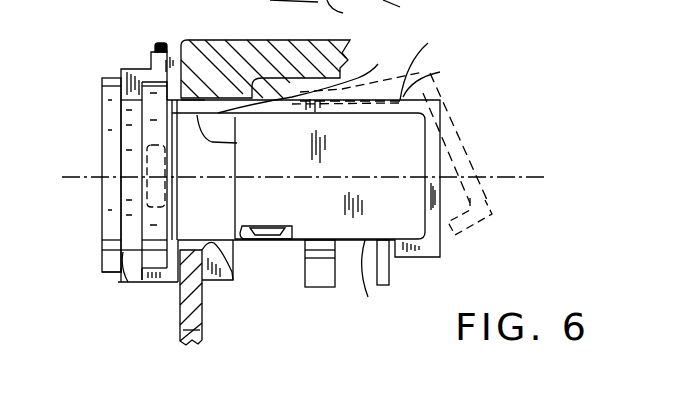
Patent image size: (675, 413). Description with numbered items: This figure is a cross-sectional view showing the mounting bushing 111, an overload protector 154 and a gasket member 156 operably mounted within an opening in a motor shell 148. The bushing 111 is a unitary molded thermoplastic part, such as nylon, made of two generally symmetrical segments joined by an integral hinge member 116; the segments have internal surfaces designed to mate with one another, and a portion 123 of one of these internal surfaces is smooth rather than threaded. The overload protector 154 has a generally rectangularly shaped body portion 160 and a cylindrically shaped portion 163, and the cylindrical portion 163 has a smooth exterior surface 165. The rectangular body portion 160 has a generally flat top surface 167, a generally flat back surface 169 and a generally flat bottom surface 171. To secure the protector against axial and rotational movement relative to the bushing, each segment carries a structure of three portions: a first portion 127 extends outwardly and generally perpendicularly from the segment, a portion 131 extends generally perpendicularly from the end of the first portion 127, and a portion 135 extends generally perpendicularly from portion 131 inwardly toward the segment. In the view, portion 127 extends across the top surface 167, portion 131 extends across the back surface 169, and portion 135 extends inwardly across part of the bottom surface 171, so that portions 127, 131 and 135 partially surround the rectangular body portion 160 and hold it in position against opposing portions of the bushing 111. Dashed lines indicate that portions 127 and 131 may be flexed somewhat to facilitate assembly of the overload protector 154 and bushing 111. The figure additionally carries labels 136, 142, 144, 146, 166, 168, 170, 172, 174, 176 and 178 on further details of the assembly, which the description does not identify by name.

The mounting bushing 111 is at (122, 52).
The hinge member 116 is at (161, 42).
The smooth portion of internal surface 123 is at (237, 143).
The first portion 127 is at (437, 67).
The portion extending from first portion 131 is at (442, 168).
The inwardly extending portion 135 is at (412, 256).
The housing cover 136 is at (356, 16).
The bolt assembly 142 is at (125, 290).
The cover flange 144 is at (408, 14).
The mounting post 146 is at (181, 330).
The motor shell 148 is at (200, 330).
The overload protector 154 is at (349, 250).
The gasket member 156 is at (99, 136).
The rectangular body portion 160 is at (402, 142).
The cylindrically shaped portion 163 is at (210, 195).
The smooth exterior surface 165 is at (311, 78).
The bore 166 is at (147, 158).
The top surface 167 is at (440, 72).
The latch bracket 168 is at (486, 197).
The back surface 169 is at (440, 150).
The base plate 170 is at (128, 278).
The bottom surface 171 is at (387, 282).
The retaining ring 172 is at (110, 246).
The inner sleeve 174 is at (152, 238).
The cam profile 176 is at (233, 272).
The clamp block 178 is at (265, 52).